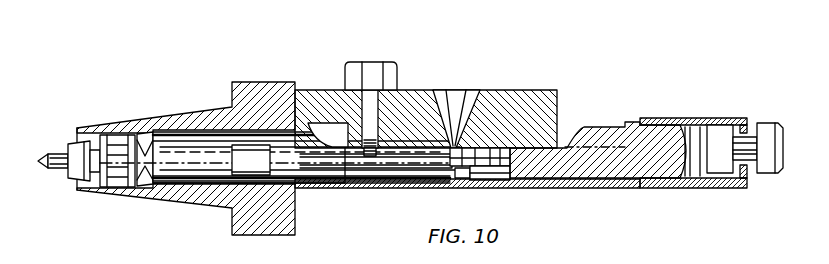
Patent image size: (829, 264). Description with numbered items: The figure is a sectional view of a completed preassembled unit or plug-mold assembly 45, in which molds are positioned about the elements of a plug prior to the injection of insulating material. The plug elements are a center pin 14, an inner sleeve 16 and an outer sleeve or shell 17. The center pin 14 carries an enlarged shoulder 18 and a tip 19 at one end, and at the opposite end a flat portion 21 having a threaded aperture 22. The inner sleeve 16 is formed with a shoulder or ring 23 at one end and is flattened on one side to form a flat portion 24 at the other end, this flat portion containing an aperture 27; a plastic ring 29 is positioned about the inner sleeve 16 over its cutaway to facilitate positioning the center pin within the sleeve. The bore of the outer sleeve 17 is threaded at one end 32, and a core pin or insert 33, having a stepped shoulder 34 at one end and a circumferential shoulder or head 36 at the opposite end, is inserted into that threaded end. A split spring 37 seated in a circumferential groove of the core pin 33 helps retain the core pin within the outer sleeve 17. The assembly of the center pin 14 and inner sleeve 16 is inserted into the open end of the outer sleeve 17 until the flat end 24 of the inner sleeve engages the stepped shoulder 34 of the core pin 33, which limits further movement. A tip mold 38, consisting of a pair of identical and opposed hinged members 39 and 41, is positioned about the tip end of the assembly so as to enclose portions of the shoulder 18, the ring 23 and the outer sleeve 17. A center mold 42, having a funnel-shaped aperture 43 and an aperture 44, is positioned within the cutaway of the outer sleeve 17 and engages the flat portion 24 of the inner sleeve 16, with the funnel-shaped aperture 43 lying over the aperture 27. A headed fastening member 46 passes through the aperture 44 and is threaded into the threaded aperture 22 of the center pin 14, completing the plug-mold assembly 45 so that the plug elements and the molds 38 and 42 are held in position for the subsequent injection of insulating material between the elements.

The center pin 14 is at (333, 184).
The inner sleeve 16 is at (420, 170).
The outer sleeve 17 is at (570, 182).
The enlarged shoulder 18 is at (74, 145).
The tip 19 is at (55, 150).
The flat portion 21 is at (382, 182).
The threaded aperture 22 is at (360, 184).
The ring 23 is at (135, 136).
The flat portion 24 is at (468, 152).
The aperture 27 is at (442, 172).
The plastic ring 29 is at (268, 177).
The threaded end 32 is at (667, 117).
The core pin 33 is at (603, 127).
The stepped shoulder 34 is at (486, 170).
The head 36 is at (768, 122).
The split spring 37 is at (695, 172).
The tip mold 38 is at (162, 148).
The hinged member 39 is at (194, 113).
The hinged member 41 is at (225, 204).
The center mold 42 is at (525, 93).
The funnel-shaped aperture 43 is at (478, 93).
The aperture 44 is at (362, 100).
The plug-mold assembly 45 is at (426, 88).
The headed fastening member 46 is at (370, 62).